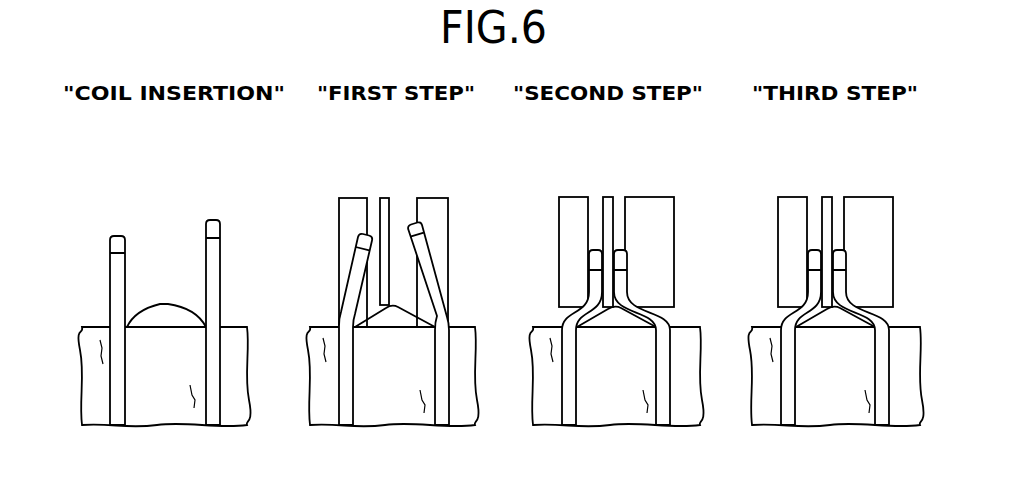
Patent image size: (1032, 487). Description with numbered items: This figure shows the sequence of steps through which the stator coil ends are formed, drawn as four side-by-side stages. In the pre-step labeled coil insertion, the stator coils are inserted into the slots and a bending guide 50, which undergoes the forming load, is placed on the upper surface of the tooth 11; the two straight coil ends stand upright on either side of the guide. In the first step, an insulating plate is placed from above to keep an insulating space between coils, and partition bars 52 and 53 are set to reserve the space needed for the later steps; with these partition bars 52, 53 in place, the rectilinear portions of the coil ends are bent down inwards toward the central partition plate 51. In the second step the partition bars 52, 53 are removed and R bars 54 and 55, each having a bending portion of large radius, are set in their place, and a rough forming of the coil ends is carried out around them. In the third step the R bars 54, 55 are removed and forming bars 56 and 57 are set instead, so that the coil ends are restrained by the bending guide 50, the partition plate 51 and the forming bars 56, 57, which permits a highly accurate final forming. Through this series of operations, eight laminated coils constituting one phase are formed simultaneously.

The tooth 11 is at (165, 335).
The bending guide 50 is at (160, 310).
The partition plate 51 is at (397, 195).
The partition bar 52 is at (352, 196).
The partition bar 53 is at (437, 196).
The R bar 54 is at (573, 196).
The R bar 55 is at (657, 196).
The forming bar 56 is at (793, 196).
The forming bar 57 is at (873, 196).